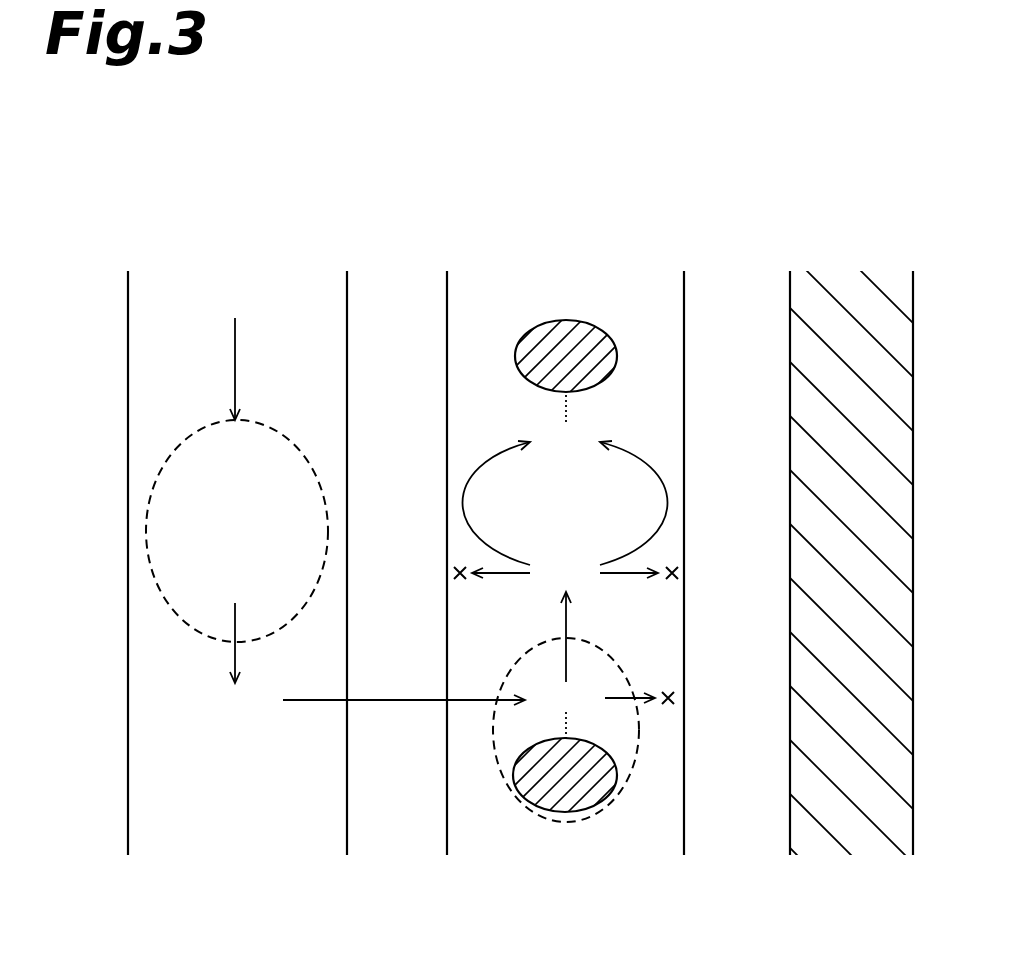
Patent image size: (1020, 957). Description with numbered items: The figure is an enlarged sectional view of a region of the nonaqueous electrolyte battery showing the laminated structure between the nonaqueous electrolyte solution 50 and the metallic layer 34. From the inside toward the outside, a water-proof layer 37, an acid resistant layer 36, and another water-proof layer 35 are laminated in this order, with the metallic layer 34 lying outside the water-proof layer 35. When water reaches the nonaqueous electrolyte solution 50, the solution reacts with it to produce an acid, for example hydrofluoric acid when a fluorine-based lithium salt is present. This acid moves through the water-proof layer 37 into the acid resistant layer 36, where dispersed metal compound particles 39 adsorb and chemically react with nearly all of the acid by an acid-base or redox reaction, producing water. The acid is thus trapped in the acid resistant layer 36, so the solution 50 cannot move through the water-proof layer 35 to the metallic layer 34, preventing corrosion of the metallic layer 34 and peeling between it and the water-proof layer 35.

The nonaqueous electrolyte solution 50 is at (347, 879).
The water-proof layer 37 is at (347, 879).
The acid resistant layer 36 is at (447, 879).
The water-proof layer 35 is at (684, 879).
The metallic layer 34 is at (790, 879).
The metal compound particles 39 is at (590, 332).